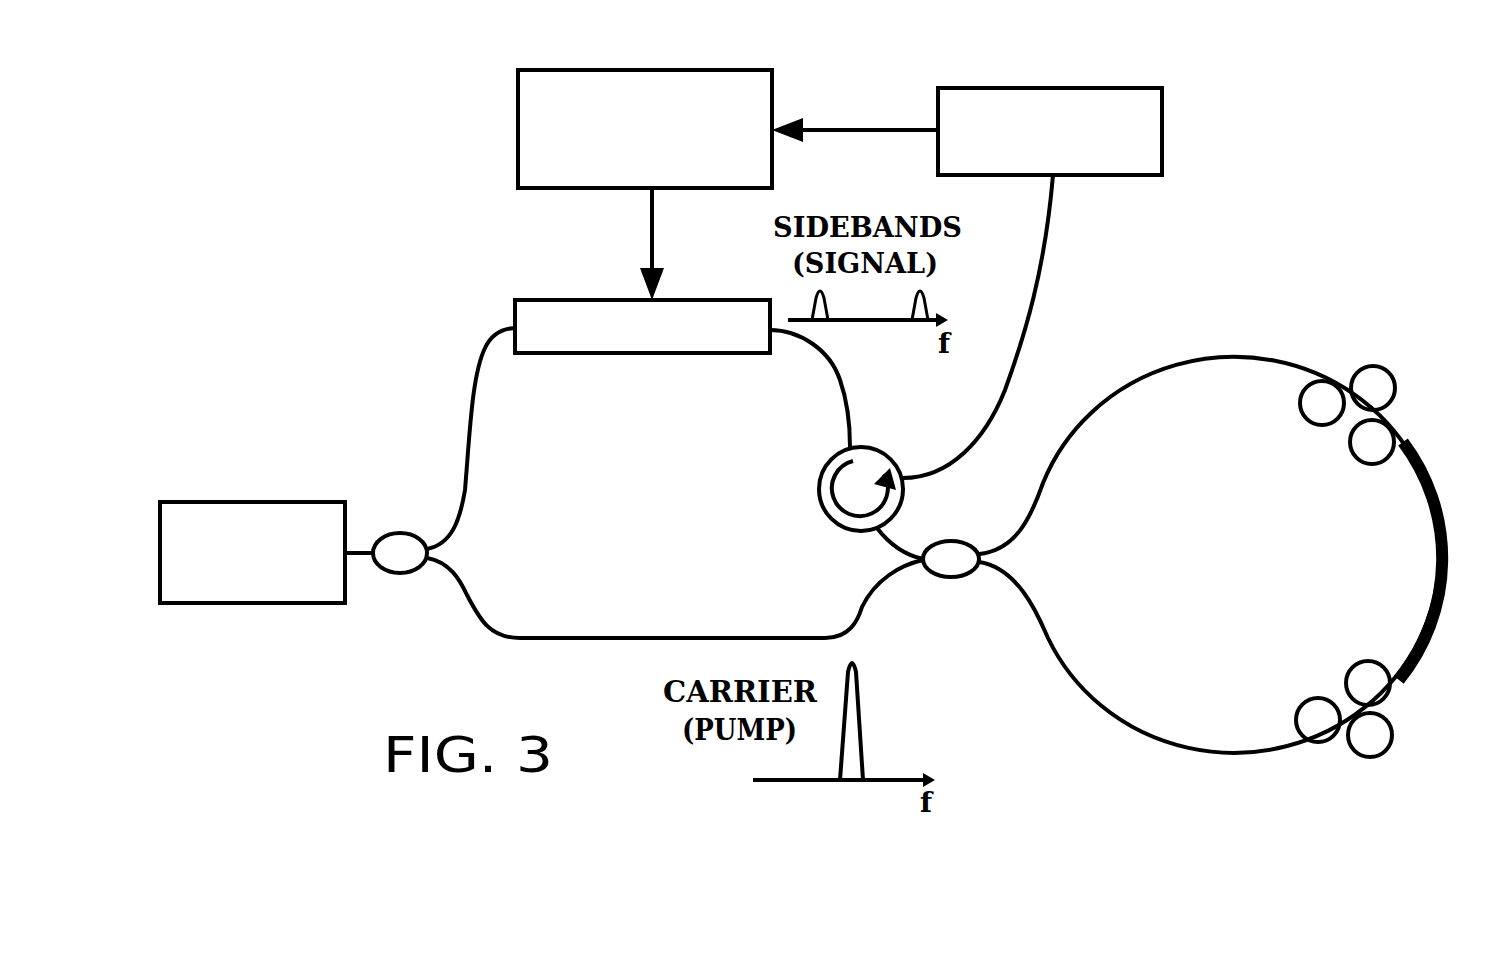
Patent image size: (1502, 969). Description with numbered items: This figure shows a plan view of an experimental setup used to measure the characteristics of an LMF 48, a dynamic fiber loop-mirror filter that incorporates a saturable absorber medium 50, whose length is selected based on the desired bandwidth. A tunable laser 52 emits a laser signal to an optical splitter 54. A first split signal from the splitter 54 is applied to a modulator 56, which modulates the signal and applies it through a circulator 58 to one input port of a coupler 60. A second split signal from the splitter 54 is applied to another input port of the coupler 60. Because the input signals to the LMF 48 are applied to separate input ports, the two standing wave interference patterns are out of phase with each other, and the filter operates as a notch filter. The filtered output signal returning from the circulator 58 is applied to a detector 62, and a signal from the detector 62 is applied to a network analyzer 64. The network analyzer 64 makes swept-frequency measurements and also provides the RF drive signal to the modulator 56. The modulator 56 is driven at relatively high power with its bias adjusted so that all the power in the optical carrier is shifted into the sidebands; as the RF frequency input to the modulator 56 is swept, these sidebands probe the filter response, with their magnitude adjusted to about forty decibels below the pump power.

The LMF 48 is at (1248, 308).
The saturable absorber medium 50 is at (1447, 492).
The tunable laser 52 is at (258, 502).
The optical splitter 54 is at (395, 530).
The modulator 56 is at (620, 356).
The circulator 58 is at (818, 513).
The coupler 60 is at (948, 542).
The detector 62 is at (1075, 88).
The network analyzer 64 is at (697, 66).